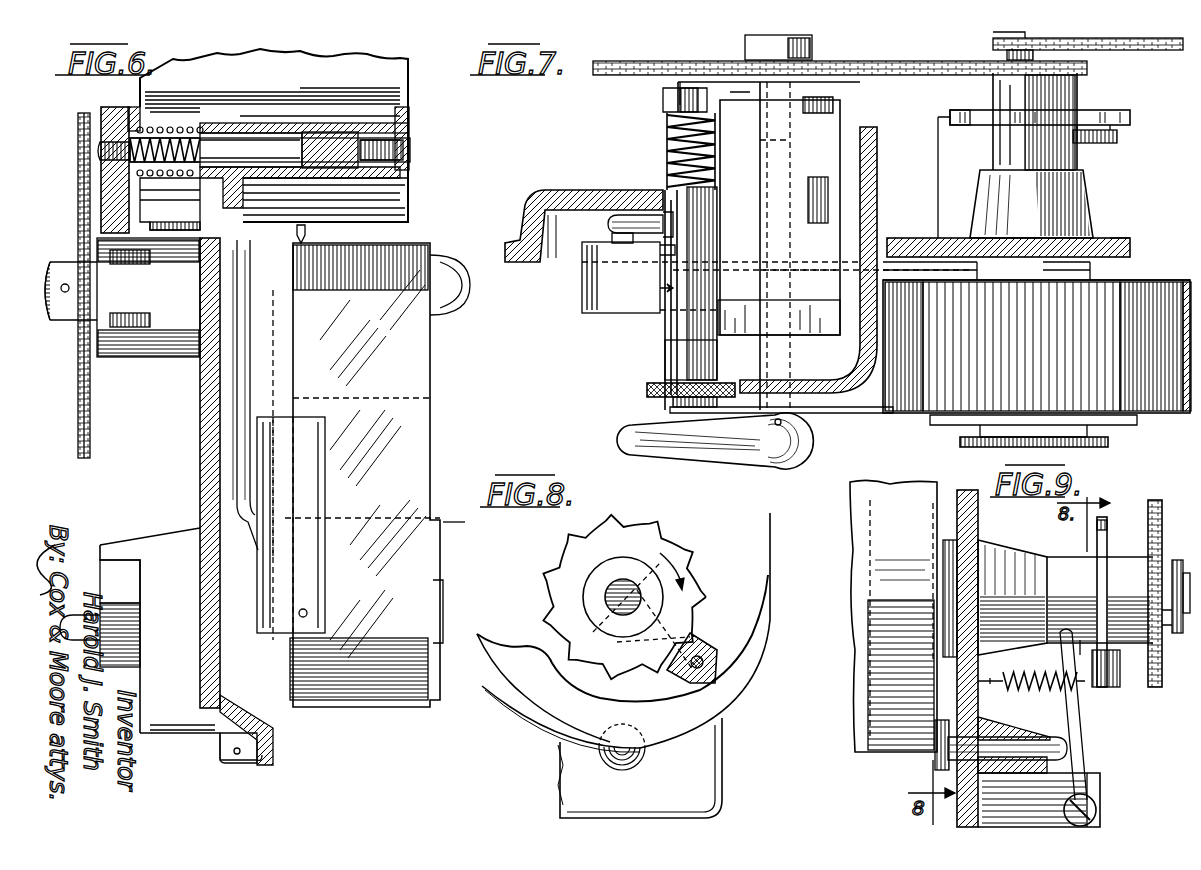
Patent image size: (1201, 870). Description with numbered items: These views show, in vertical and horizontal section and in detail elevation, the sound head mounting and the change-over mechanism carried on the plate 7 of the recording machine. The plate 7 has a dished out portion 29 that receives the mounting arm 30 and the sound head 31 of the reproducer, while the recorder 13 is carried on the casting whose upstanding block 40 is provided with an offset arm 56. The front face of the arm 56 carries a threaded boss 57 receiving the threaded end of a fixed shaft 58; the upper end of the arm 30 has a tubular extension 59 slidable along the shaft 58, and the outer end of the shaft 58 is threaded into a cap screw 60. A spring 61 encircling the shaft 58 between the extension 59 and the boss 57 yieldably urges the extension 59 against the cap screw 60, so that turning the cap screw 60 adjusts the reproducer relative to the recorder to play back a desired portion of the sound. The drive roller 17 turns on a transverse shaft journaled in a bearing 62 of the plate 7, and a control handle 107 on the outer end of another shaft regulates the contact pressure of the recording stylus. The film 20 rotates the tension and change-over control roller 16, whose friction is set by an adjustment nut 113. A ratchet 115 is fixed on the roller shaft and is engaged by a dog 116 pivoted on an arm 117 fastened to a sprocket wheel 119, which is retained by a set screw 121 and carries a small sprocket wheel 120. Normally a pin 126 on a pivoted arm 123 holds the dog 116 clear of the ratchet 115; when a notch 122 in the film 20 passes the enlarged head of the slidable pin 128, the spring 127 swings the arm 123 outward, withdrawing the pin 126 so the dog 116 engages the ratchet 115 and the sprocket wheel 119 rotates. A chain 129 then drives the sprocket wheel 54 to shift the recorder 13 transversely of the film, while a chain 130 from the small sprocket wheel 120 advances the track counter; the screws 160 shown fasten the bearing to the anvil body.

In FIG. 6, the plate 7 is at (200, 398).
In FIG. 7, the plate 7 is at (545, 190).
In FIG. 9, the plate 7 is at (975, 525).
In FIG. 6, the recorder 13 is at (408, 195).
In FIG. 7, the tension and change-over control roller 16 is at (905, 413).
In FIG. 8, the tension and change-over control roller 16 is at (730, 680).
In FIG. 9, the tension and change-over control roller 16 is at (850, 500).
In FIG. 6, the drive roller 17 is at (440, 525).
In FIG. 8, the drive roller 17 is at (468, 523).
In FIG. 6, the film 20 is at (428, 432).
In FIG. 6, the dished out portion 29 is at (258, 700).
In FIG. 6, the mounting arm 30 is at (228, 445).
In FIG. 7, the mounting arm 30 is at (625, 215).
In FIG. 6, the sound head 31 is at (318, 612).
In FIG. 7, the sound head 31 is at (595, 298).
In FIG. 7, the upstanding portion or block 40 is at (762, 246).
In FIG. 6, the sprocket wheel 54 is at (78, 390).
In FIG. 6, the offset arm 56 is at (101, 218).
In FIG. 7, the offset arm 56 is at (737, 74).
In FIG. 6, the boss 57 is at (140, 107).
In FIG. 6, the fixed shaft 58 is at (265, 125).
In FIG. 6, the tubular extension 59 is at (300, 125).
In FIG. 7, the tubular extension 59 is at (677, 243).
In FIG. 6, the cap screw 60 is at (373, 125).
In FIG. 7, the cap screw 60 is at (665, 357).
In FIG. 6, the spring 61 is at (172, 178).
In FIG. 7, the spring 61 is at (665, 125).
In FIG. 6, the bearing 62 is at (125, 545).
In FIG. 7, the control handle 107 is at (625, 428).
In FIG. 7, the adjustment nut 113 is at (1108, 443).
In FIG. 7, the ratchet 115 is at (953, 112).
In FIG. 8, the ratchet 115 is at (672, 550).
In FIG. 9, the ratchet 115 is at (1103, 520).
In FIG. 8, the dog 116 is at (700, 635).
In FIG. 7, the arm 117 is at (1110, 110).
In FIG. 8, the arm 117 is at (720, 600).
In FIG. 9, the sprocket wheel 119 is at (1160, 500).
In FIG. 9, the small sprocket wheel 120 is at (1178, 560).
In FIG. 9, the set screw 121 is at (1185, 640).
In FIG. 7, the notch 122 is at (1125, 272).
In FIG. 7, the arm 123 is at (1108, 143).
In FIG. 9, the arm 123 is at (1080, 722).
In FIG. 9, the pin 126 is at (1083, 660).
In FIG. 9, the spring 127 is at (1025, 668).
In FIG. 8, the pin 128 is at (638, 760).
In FIG. 9, the pin 128 is at (1055, 737).
In FIG. 7, the chain 129 is at (880, 60).
In FIG. 7, the chain 130 is at (1148, 50).
In FIG. 6, the motor 160 is at (148, 312).